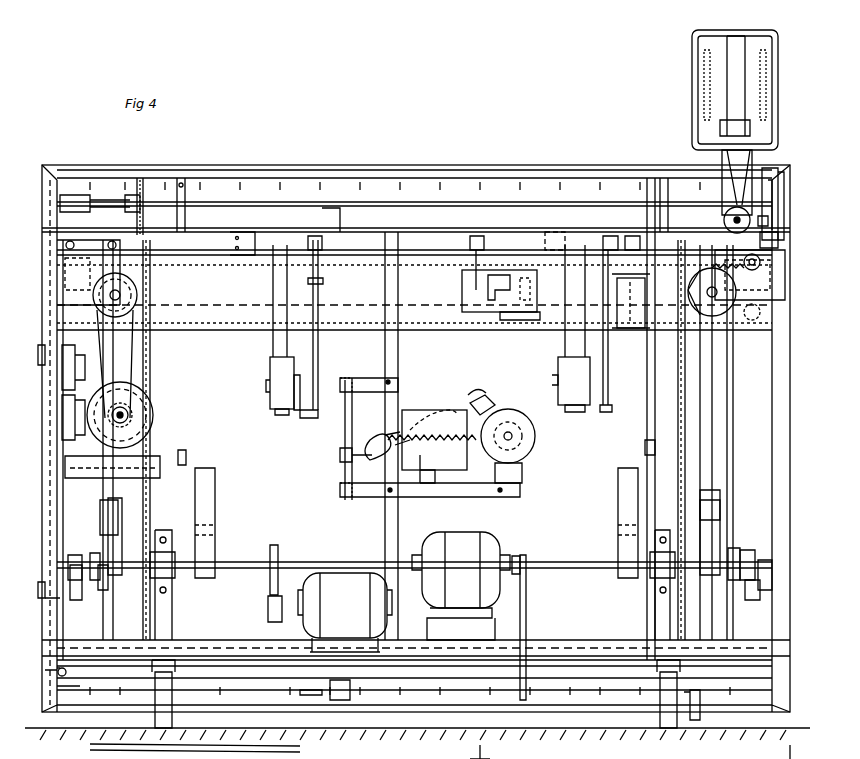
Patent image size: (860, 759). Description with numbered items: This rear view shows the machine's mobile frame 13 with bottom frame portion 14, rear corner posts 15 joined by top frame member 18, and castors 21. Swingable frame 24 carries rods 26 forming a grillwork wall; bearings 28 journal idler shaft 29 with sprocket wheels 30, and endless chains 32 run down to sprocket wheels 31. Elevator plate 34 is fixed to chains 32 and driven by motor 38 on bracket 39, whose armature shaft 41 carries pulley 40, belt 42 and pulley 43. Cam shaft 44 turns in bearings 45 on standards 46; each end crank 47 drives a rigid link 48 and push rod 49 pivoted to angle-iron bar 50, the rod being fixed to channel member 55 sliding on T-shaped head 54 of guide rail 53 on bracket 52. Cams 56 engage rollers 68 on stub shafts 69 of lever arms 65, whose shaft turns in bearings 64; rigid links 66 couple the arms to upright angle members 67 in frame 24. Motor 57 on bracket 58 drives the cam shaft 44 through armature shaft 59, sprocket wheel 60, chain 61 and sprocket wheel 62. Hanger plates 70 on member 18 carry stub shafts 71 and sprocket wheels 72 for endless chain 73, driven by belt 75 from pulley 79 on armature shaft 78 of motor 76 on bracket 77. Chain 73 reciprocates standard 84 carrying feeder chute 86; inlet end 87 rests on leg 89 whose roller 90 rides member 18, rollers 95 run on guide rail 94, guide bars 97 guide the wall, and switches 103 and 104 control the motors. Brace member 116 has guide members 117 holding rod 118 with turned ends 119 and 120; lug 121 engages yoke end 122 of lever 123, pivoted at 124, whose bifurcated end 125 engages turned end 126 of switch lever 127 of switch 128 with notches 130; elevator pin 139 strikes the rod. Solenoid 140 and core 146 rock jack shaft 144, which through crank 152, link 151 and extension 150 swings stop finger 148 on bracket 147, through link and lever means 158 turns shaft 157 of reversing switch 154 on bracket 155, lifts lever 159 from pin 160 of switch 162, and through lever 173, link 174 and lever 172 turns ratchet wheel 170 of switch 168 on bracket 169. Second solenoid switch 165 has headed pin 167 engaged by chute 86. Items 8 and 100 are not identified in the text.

The section line 8 is at (170, 502).
The mobile supporting frame 13 is at (44, 544).
The rectangular bottom frame portion 14 is at (602, 640).
The upright rear corner posts 15 is at (40, 472).
The top frame member 18 is at (218, 236).
The castors 21 is at (675, 725).
The rectangular frame 24 is at (460, 700).
The rods 26 is at (297, 698).
The bearings 28 is at (68, 187).
The shaft 29 is at (486, 202).
The sprocket wheels 30 is at (170, 193).
The sprocket wheels 31 is at (110, 700).
The endless sprocket chain 32 is at (678, 414).
The plate 34 is at (574, 692).
The electric motor 38 is at (438, 538).
The bracket 39 is at (500, 622).
The belt pulley 40 is at (535, 552).
The armature shaft 41 is at (518, 556).
The belt 42 is at (526, 606).
The belt pulley 43 is at (520, 695).
The cam shaft 44 is at (300, 562).
The bearings 45 is at (250, 572).
The standards 46 is at (232, 606).
The crank 47 is at (115, 496).
The rigid link 48 is at (108, 510).
The push rod 49 is at (105, 580).
The bar 50 is at (100, 615).
The bracket 52 is at (60, 600).
The guide rail 53 is at (70, 562).
The T-shaped head 54 is at (92, 584).
The channel member 55 is at (97, 558).
The cam 56 is at (208, 500).
The electric motor 57 is at (345, 605).
The bracket 58 is at (345, 630).
The armature shaft 59 is at (282, 622).
The sprocket wheel 60 is at (272, 612).
The endless chain 61 is at (270, 590).
The sprocket wheel 62 is at (272, 554).
The bearings 64 is at (56, 688).
The lever arms 65 is at (640, 500).
The rigid link 66 is at (185, 455).
The upright angle member 67 is at (184, 199).
The roller 68 is at (205, 522).
The pin or stub shaft 69 is at (246, 700).
The hanger plate 70 is at (65, 288).
The stub shaft 71 is at (118, 294).
The sprocket wheel 72 is at (138, 295).
The endless chain 73 is at (234, 326).
The endless drive belt 75 is at (128, 382).
The electric motor 76 is at (153, 415).
The bracket 77 is at (72, 488).
The armature shaft 78 is at (118, 414).
The belt pulley 79 is at (122, 422).
The supporting standard 84 is at (722, 216).
The feeder chute 86 is at (688, 97).
The inlet end 87 is at (92, 744).
The depending leg 89 is at (728, 150).
The roller 90 is at (737, 182).
The guide rail 94 is at (455, 313).
The rollers 95 is at (785, 266).
The guide bars 97 is at (40, 352).
The floor 100 is at (772, 723).
The switch 103 is at (62, 378).
The switch 104 is at (62, 414).
The brace member 116 is at (398, 360).
The guide members 117 is at (362, 378).
The rod 118 is at (345, 426).
The laterally turned lower end 119 is at (357, 693).
The laterally turned upper end 120 is at (320, 229).
The lug 121 is at (363, 440).
The yoke shaped end 122 is at (345, 458).
The lever 123 is at (450, 400).
The pivot 124 is at (414, 424).
The bifurcated end 125 is at (482, 398).
The laterally turned end 126 is at (468, 390).
The switch lever 127 is at (538, 428).
The switch 128 is at (506, 416).
The notches 130 is at (432, 446).
The pin 139 is at (396, 700).
The solenoid 140 is at (629, 317).
The jack shaft 144 is at (545, 232).
The core 146 is at (605, 272).
The bracket 147 is at (774, 200).
The curved stop finger 148 is at (630, 236).
The extension 150 is at (778, 170).
The depending link 151 is at (780, 186).
The crank 152 is at (778, 240).
The reversing switch 154 is at (574, 406).
The bracket 155 is at (566, 344).
The shaft 157 is at (556, 380).
The link and lever means 158 is at (612, 236).
The lever 159 is at (474, 232).
The pin 160 is at (470, 290).
The switch 162 is at (515, 312).
The second solenoid switch 165 is at (776, 210).
The headed pin 167 is at (765, 222).
The switch 168 is at (270, 368).
The bracket 169 is at (274, 284).
The ratchet wheel 170 is at (300, 372).
The lever 172 is at (304, 420).
The lever 173 is at (330, 232).
The link 174 is at (315, 362).